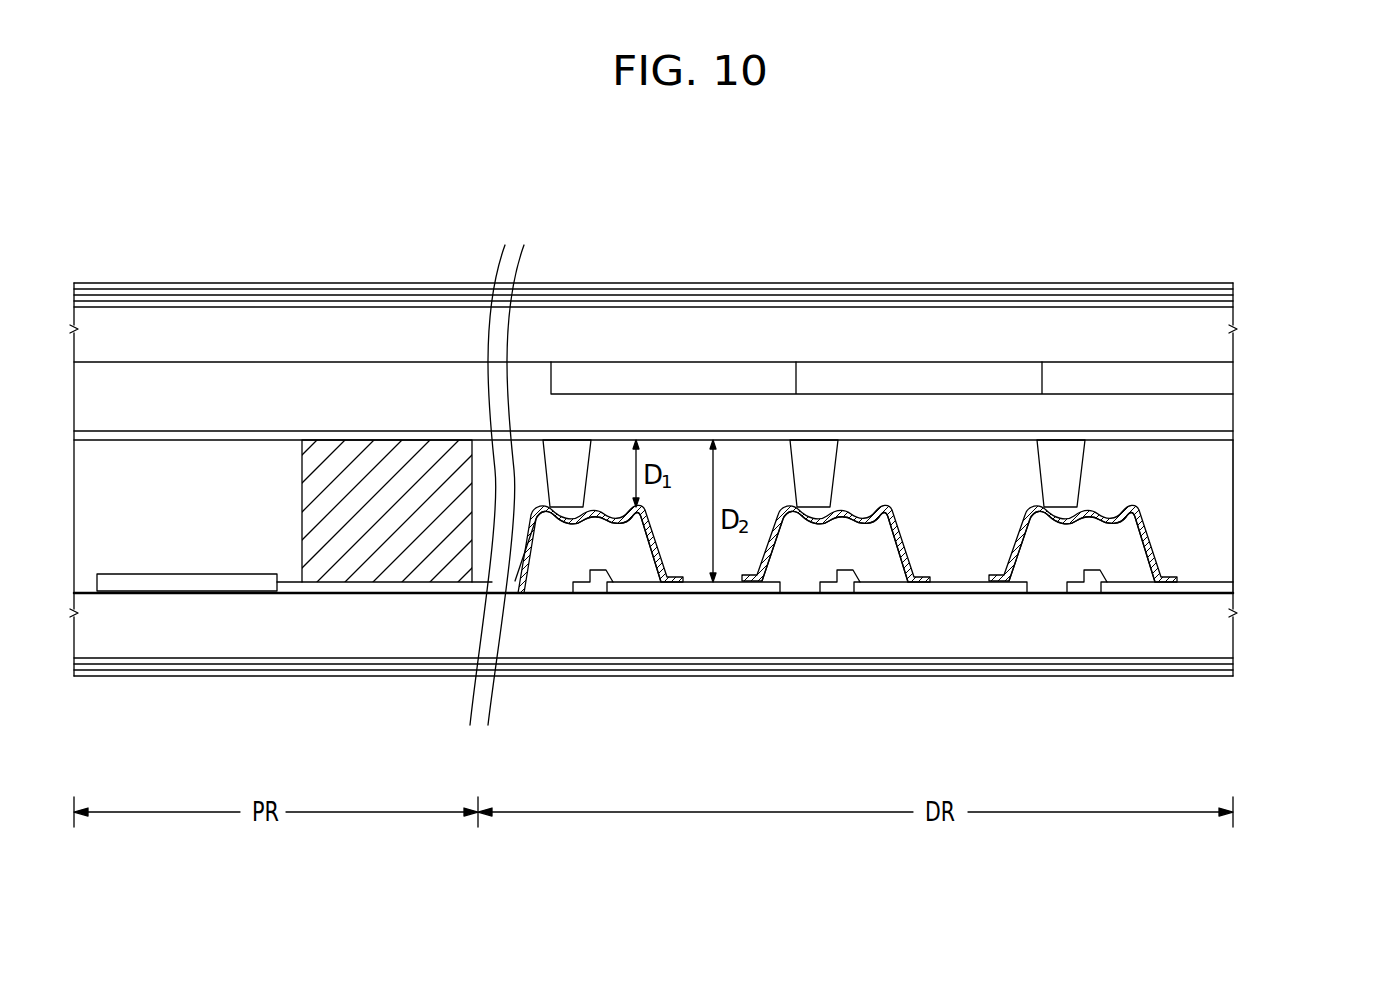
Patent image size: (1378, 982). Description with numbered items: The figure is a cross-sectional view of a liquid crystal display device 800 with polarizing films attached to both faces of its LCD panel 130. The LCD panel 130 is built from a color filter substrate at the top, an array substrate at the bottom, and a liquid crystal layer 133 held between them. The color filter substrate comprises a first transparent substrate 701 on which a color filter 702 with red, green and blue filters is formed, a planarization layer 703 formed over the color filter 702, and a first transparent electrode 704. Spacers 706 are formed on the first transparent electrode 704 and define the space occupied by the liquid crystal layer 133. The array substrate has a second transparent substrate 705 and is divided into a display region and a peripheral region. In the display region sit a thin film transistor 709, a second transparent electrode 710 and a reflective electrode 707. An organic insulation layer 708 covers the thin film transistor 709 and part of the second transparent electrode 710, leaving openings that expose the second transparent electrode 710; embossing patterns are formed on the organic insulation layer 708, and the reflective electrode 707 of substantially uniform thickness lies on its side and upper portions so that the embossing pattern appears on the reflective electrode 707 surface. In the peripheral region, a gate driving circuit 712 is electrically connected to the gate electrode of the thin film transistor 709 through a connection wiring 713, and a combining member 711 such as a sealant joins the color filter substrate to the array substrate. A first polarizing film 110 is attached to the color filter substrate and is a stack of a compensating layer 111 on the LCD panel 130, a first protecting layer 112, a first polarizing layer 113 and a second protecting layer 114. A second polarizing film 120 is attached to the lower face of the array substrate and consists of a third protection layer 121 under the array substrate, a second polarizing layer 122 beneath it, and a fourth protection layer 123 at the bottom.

The liquid crystal display device 800 is at (1200, 242).
The first polarizing film 110 is at (717, 287).
The compensating layer 111 is at (689, 319).
The first protecting layer 112 is at (1233, 297).
The first polarizing layer 113 is at (1233, 290).
The second protecting layer 114 is at (1233, 284).
The LCD panel 130 is at (717, 485).
The first transparent substrate 701 is at (1233, 353).
The color filter 702 is at (1233, 376).
The planarization layer 703 is at (1233, 407).
The first transparent electrode 704 is at (1233, 437).
The liquid crystal layer 133 is at (1233, 497).
The second transparent substrate 705 is at (689, 610).
The spacers 706 is at (827, 465).
The reflective electrode 707 is at (902, 530).
The organic insulation layer 708 is at (888, 553).
The thin film transistor 709 is at (838, 594).
The second transparent electrode 710 is at (898, 594).
The combining member 711 is at (302, 508).
The gate driving circuit 712 is at (173, 582).
The connection wiring 713 is at (345, 588).
The second polarizing film 120 is at (717, 676).
The third protection layer 121 is at (1233, 659).
The second polarizing layer 122 is at (1233, 665).
The fourth protection layer 123 is at (1233, 672).